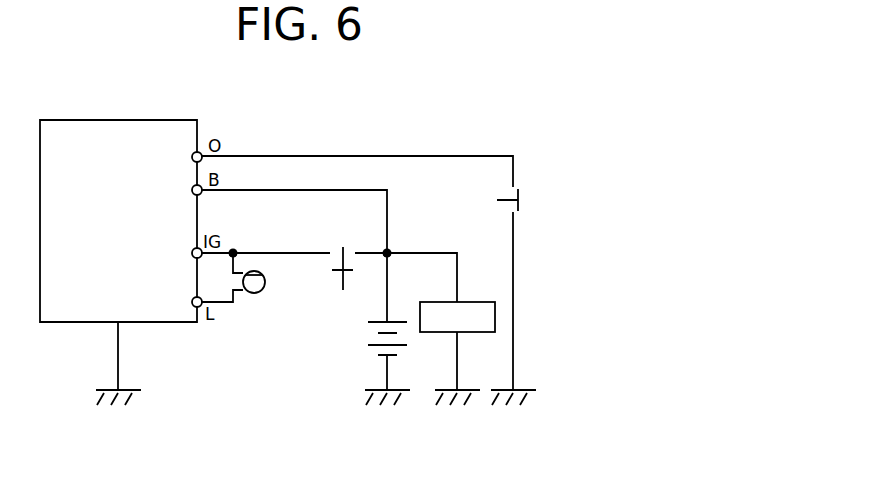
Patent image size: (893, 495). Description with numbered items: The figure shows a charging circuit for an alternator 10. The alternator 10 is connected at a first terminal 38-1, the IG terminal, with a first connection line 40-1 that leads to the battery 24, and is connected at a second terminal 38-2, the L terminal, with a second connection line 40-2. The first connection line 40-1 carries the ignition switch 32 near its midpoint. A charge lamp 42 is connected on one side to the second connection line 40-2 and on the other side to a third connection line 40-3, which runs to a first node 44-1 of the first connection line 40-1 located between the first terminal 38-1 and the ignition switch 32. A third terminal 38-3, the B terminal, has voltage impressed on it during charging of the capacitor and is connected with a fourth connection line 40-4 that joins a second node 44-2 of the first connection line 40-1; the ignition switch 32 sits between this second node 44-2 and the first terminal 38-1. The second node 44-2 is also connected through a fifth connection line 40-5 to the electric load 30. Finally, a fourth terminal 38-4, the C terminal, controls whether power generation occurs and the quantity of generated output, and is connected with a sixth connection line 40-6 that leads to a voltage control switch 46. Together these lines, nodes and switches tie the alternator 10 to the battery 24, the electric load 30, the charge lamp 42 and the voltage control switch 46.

The alternator 10 is at (60, 126).
The first terminal 38-1 is at (190, 247).
The second terminal 38-2 is at (190, 303).
The third terminal 38-3 is at (190, 190).
The fourth terminal 38-4 is at (189, 150).
The first connection line 40-1 is at (323, 249).
The second connection line 40-2 is at (224, 307).
The third connection line 40-3 is at (262, 270).
The fourth connection line 40-4 is at (392, 209).
The fifth connection line 40-5 is at (425, 252).
The sixth connection line 40-6 is at (285, 152).
The first node 44-1 is at (238, 249).
The second node 44-2 is at (393, 249).
The voltage control switch 46 is at (519, 203).
The electric load 30 is at (479, 301).
The ignition switch 32 is at (343, 290).
The battery 24 is at (370, 338).
The charge lamp 42 is at (255, 294).